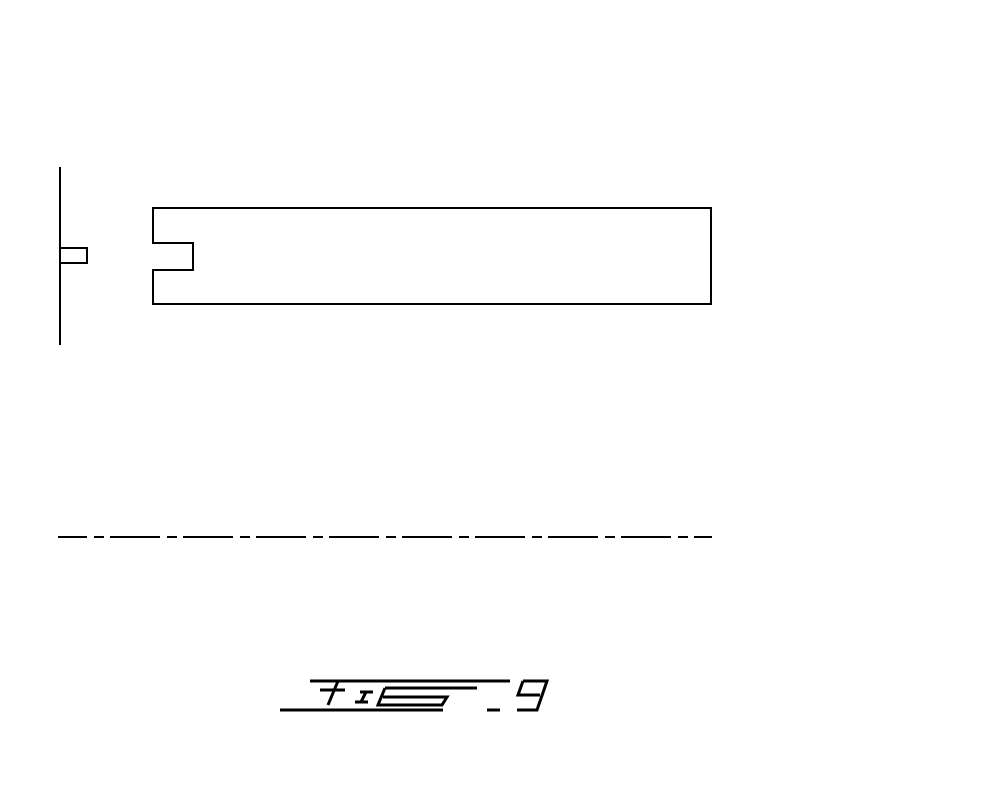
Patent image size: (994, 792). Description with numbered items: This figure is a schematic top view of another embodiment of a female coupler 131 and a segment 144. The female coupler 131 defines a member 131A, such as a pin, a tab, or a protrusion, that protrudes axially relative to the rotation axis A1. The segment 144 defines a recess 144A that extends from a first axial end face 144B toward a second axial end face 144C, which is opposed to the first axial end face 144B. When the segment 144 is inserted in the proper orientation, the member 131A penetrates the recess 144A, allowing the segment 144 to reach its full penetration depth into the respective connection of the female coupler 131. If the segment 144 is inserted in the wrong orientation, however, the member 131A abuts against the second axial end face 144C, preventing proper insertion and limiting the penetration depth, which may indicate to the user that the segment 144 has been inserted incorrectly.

The female coupler 131 is at (60, 200).
The member 131A is at (73, 263).
The segment 144 is at (595, 183).
The recess 144A is at (173, 243).
The first axial end face 144B is at (153, 288).
The second axial end face 144C is at (711, 257).
The rotation axis A1 is at (583, 538).